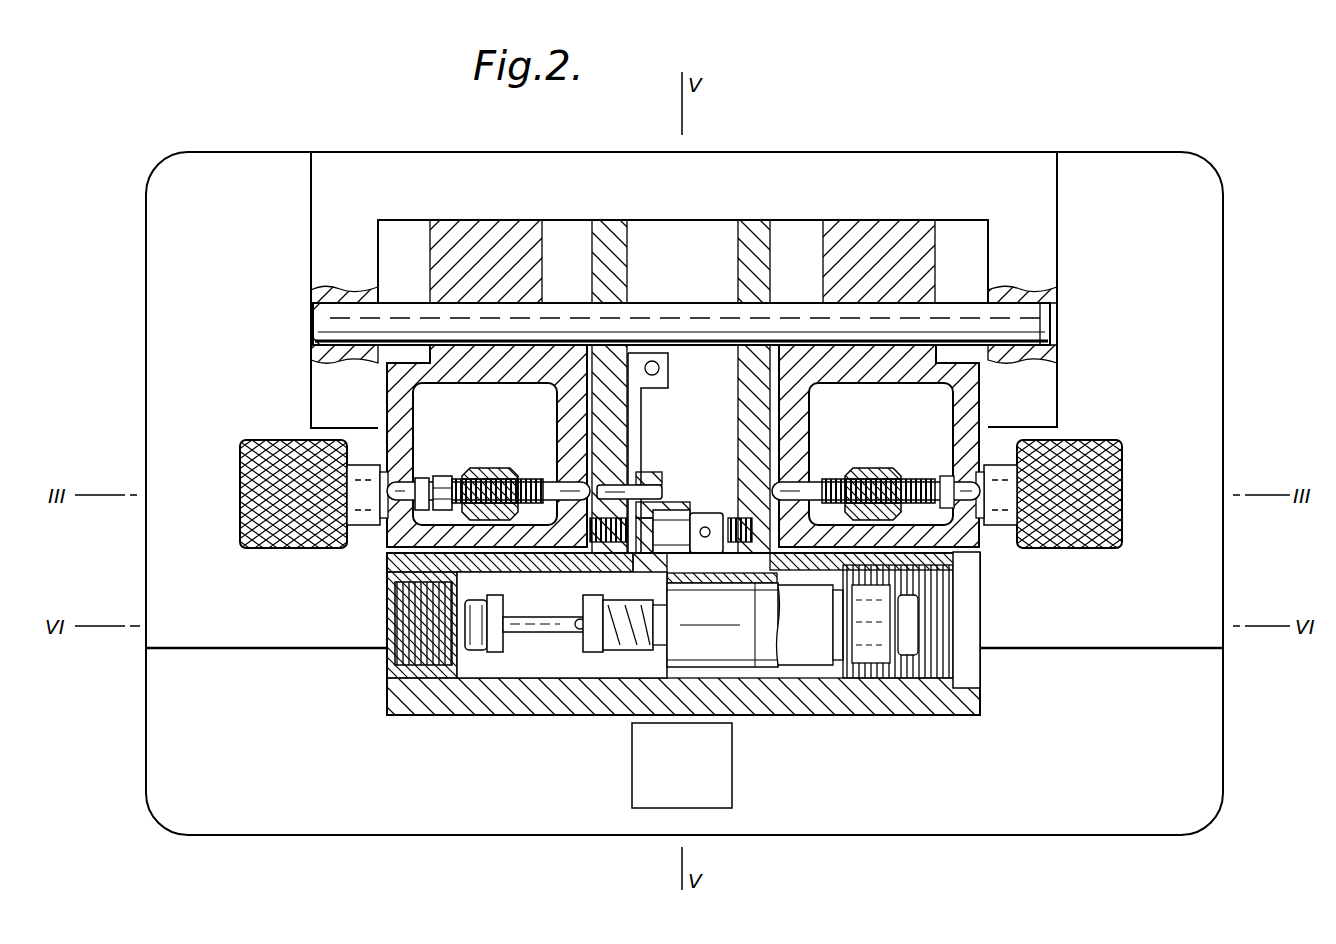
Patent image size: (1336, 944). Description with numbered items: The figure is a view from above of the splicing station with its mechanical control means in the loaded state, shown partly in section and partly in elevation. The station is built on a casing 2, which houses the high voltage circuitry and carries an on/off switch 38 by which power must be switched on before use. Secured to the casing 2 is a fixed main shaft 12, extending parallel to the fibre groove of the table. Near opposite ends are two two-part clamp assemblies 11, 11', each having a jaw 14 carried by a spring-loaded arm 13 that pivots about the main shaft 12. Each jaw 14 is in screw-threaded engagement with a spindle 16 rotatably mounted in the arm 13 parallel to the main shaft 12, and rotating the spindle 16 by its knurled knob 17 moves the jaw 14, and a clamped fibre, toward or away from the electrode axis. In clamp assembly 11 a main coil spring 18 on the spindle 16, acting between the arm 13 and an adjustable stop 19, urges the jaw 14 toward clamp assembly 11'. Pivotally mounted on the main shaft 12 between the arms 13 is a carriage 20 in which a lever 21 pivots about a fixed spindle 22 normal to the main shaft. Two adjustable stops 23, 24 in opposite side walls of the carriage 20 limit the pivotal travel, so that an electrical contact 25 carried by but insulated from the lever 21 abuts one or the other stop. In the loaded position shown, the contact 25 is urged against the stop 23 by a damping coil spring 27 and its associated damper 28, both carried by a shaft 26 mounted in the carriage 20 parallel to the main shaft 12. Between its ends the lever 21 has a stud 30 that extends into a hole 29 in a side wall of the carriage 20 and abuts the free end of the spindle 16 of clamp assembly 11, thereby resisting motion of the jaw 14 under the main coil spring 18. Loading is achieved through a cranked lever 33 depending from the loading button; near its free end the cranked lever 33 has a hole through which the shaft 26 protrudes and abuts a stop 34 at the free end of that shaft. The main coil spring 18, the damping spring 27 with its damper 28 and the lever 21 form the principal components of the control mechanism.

The casing 2 is at (1097, 815).
The two-part clamp assembly 11 is at (457, 533).
The two-part clamp assembly 11' is at (912, 530).
The fixed main shaft 12 is at (1040, 315).
The spring-loaded arm 13 is at (395, 415).
The jaw 14 is at (495, 470).
The spindle 16 is at (532, 480).
The knurled knob 17 is at (258, 478).
The main coil spring 18 is at (423, 480).
The adjustable stop 19 is at (447, 488).
The carriage 20 is at (808, 718).
The lever 21 is at (648, 413).
The fixed spindle 22 is at (660, 370).
The adjustable stop 23 is at (600, 560).
The adjustable stop 24 is at (772, 562).
The electrical contact 25 is at (682, 515).
The shaft 26 is at (553, 632).
The damping coil spring 27 is at (622, 645).
The damper 28 is at (727, 652).
The hole 29 is at (628, 472).
The stud 30 is at (665, 490).
The cranked lever 33 is at (497, 648).
The stop 34 is at (478, 590).
The on/off switch 38 is at (645, 752).